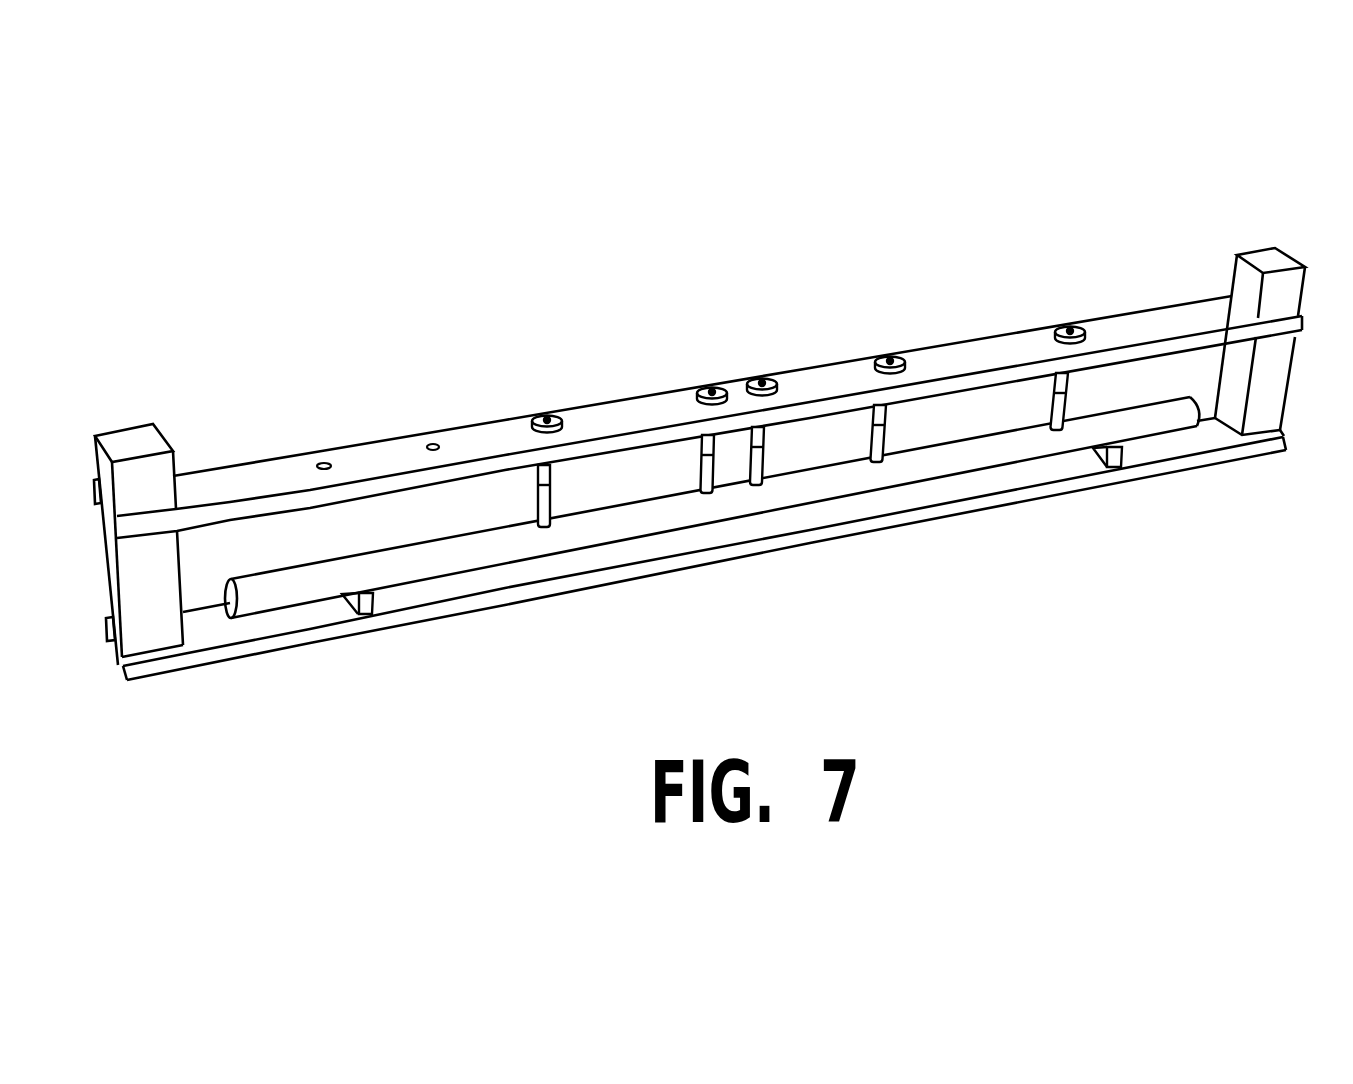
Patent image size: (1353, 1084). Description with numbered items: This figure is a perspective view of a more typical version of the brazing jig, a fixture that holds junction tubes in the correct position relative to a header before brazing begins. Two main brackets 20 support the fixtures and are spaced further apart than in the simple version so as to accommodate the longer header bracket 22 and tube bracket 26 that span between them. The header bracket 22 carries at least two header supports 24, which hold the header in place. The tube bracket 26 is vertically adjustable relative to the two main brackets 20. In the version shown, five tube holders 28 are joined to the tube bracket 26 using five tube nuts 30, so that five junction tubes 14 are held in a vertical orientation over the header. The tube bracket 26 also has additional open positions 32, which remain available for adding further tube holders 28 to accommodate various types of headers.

The junction tubes 14 is at (763, 483).
The main brackets 20 is at (152, 588).
The header bracket 22 is at (1030, 505).
The header supports 24 is at (355, 617).
The tube bracket 26 is at (1100, 315).
The tube holders 28 is at (551, 476).
The tube nuts 30 is at (888, 355).
The open positions 32 is at (433, 444).